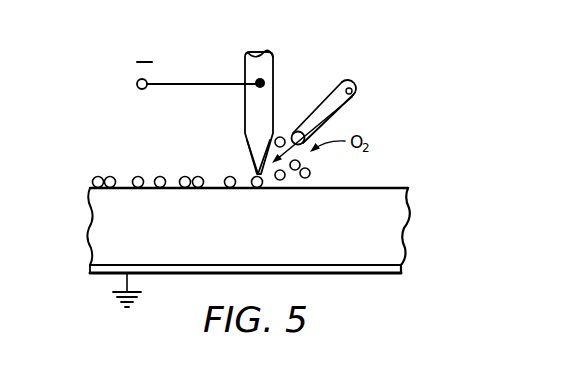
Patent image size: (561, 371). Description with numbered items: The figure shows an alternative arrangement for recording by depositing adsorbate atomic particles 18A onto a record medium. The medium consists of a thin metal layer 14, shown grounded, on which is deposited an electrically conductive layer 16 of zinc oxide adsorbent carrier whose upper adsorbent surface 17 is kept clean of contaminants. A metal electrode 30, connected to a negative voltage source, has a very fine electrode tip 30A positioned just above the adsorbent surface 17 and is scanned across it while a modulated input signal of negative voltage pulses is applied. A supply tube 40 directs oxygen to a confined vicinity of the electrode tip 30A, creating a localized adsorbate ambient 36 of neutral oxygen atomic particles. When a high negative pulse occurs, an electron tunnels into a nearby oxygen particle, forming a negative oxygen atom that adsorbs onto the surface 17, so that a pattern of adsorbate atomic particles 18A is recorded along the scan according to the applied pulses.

The thin metal layer 14 is at (90, 270).
The electrically conductive layer of adsorbent carrier 16 is at (90, 212).
The adsorbent surface 17 is at (382, 188).
The adsorbate atomic particles 18A is at (111, 177).
The electrode 30 is at (273, 66).
The fine electrode tip 30A is at (250, 158).
The localized adsorbate ambient 36 is at (312, 173).
The supply tube 40 is at (352, 98).